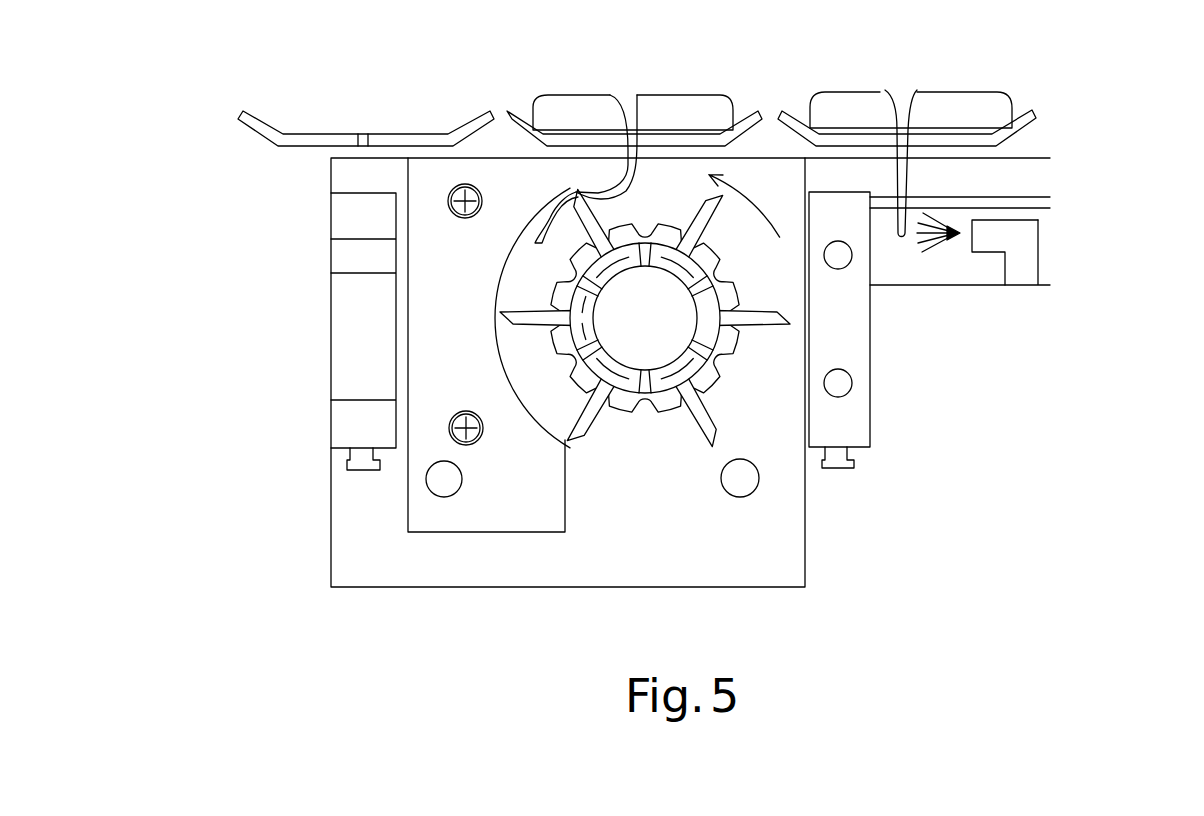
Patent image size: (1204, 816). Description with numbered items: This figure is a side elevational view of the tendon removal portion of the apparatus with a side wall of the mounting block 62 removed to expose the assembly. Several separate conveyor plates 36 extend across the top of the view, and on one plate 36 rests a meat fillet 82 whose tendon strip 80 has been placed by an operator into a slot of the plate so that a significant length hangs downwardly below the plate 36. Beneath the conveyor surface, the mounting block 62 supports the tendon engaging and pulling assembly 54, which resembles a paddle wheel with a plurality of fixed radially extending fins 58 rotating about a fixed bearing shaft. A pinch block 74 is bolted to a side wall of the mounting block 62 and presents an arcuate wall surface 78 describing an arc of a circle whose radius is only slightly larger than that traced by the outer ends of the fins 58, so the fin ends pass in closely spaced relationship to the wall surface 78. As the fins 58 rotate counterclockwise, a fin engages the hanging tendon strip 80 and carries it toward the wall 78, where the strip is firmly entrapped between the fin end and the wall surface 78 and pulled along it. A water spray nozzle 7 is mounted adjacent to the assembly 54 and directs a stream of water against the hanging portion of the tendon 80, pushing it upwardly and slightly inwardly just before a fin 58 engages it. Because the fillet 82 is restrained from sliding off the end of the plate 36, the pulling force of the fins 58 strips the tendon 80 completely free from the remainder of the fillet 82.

The water spray nozzle 7 is at (1025, 260).
The plate 36 is at (320, 145).
The tendon engaging and pulling assembly 54 is at (950, 438).
The fins 58 is at (587, 418).
The mounting block 62 is at (256, 247).
The pinch block 74 is at (422, 510).
The arcuate wall surface 78 is at (532, 422).
The tendon strip 80 is at (1143, 164).
The fillet 82 is at (950, 100).